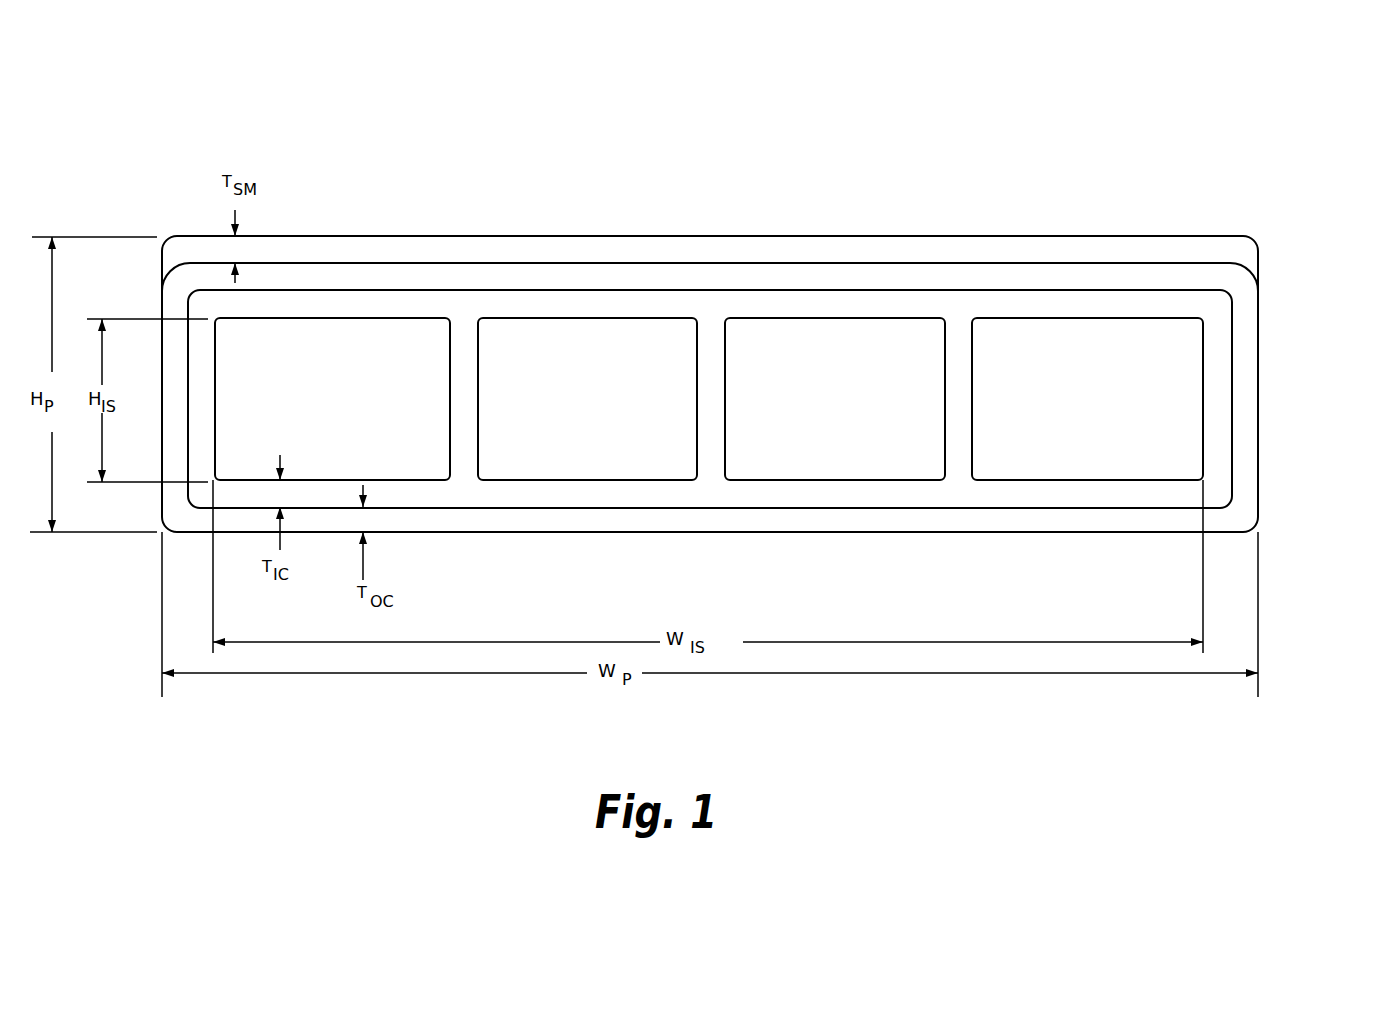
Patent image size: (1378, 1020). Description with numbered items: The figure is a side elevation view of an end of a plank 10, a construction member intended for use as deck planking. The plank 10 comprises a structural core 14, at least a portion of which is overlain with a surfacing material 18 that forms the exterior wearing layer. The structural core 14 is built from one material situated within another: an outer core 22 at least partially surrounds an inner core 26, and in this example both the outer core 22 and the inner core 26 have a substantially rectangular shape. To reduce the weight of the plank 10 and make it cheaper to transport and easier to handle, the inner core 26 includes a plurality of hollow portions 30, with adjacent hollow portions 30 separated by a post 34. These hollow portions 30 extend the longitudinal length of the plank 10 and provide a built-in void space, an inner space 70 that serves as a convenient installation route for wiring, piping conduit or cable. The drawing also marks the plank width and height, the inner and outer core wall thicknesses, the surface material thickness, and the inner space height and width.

The plank 10 is at (1030, 113).
The structural core 14 is at (1270, 307).
The surfacing material 18 is at (365, 245).
The outer core 22 is at (605, 277).
The inner core 26 is at (833, 307).
The hollow portions 30 is at (364, 417).
The post 34 is at (465, 395).
The inner space 70 is at (1022, 457).